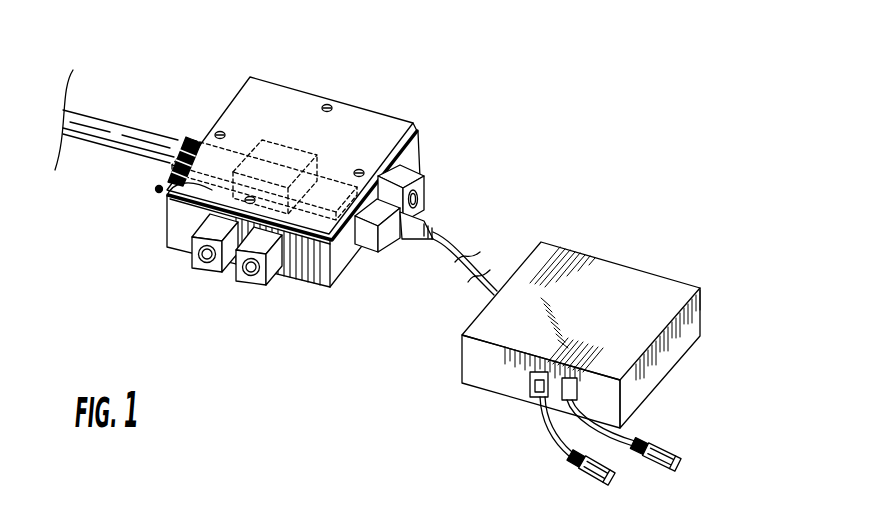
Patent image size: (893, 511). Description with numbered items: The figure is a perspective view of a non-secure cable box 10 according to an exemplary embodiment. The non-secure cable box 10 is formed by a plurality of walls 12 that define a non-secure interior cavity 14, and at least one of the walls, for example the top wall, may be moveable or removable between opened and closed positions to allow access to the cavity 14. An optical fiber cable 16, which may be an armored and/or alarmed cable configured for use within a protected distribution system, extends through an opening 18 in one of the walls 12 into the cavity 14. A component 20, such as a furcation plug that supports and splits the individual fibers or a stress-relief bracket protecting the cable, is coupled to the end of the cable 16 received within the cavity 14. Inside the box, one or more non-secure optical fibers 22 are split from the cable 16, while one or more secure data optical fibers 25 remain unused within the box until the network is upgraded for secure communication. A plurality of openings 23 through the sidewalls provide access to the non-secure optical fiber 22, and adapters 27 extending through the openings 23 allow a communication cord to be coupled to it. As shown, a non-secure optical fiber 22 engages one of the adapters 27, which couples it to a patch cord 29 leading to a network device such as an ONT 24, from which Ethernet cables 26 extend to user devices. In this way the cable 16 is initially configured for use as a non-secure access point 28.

The non-secure cable box 10 is at (353, 82).
The walls 12 is at (293, 107).
The non-secure interior cavity 14 is at (263, 101).
The optical fiber cable 16 is at (118, 132).
The opening 18 is at (189, 137).
The component 20 is at (298, 152).
The non-secure optical fibers 22 is at (314, 276).
The openings 23 is at (403, 170).
The ONT 24 is at (653, 290).
The secure data optical fibers 25 is at (341, 177).
The Ethernet cables 26 is at (630, 437).
The adapters 27 is at (418, 177).
The non-secure access point 28 is at (657, 489).
The patch cord 29 is at (440, 247).